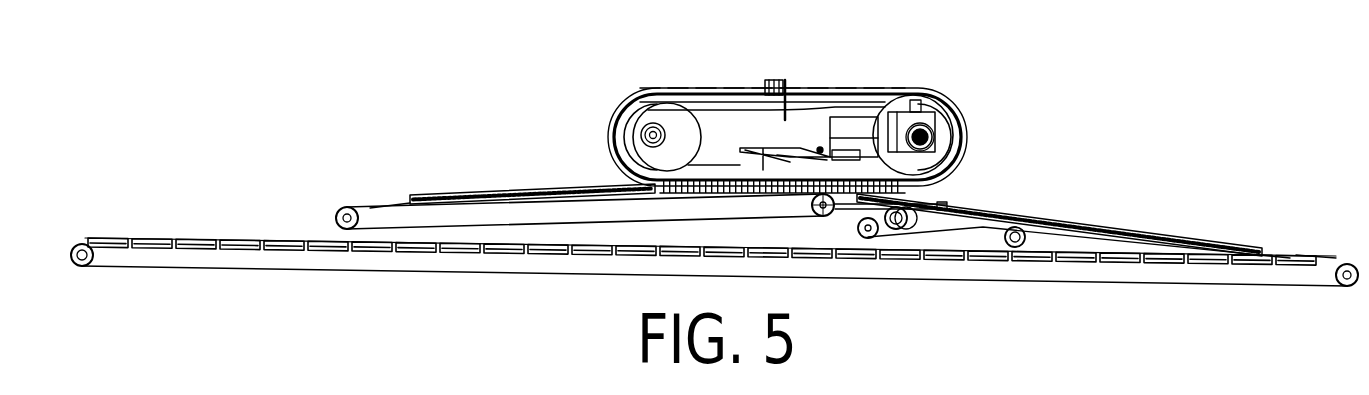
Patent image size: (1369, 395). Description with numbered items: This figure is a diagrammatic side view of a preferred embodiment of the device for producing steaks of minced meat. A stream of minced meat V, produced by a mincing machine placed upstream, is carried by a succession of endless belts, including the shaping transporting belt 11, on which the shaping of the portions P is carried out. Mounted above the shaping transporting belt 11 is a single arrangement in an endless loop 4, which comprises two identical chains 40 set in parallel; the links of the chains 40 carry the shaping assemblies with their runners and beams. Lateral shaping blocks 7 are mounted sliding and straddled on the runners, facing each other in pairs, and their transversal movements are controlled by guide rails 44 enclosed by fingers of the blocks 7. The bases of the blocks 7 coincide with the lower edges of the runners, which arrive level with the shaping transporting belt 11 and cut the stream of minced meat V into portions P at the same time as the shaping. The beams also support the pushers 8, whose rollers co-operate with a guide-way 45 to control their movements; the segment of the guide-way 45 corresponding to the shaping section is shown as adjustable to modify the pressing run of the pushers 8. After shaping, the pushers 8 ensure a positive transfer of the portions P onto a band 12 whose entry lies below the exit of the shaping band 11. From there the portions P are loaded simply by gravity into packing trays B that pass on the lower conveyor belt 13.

The arrangement in an endless loop 4 is at (820, 107).
The lateral shaping block 7 is at (773, 82).
The pusher 8 is at (797, 90).
The chain 40 is at (837, 78).
The guide rail 44 is at (877, 102).
The guide-way 45 is at (718, 102).
The shaping transporting belt 11 is at (590, 213).
The band 12 is at (1052, 225).
The lower conveyor belt 13 is at (1152, 272).
The stream of minced meat V is at (502, 193).
The portion P is at (1108, 223).
The packing tray B is at (1315, 255).